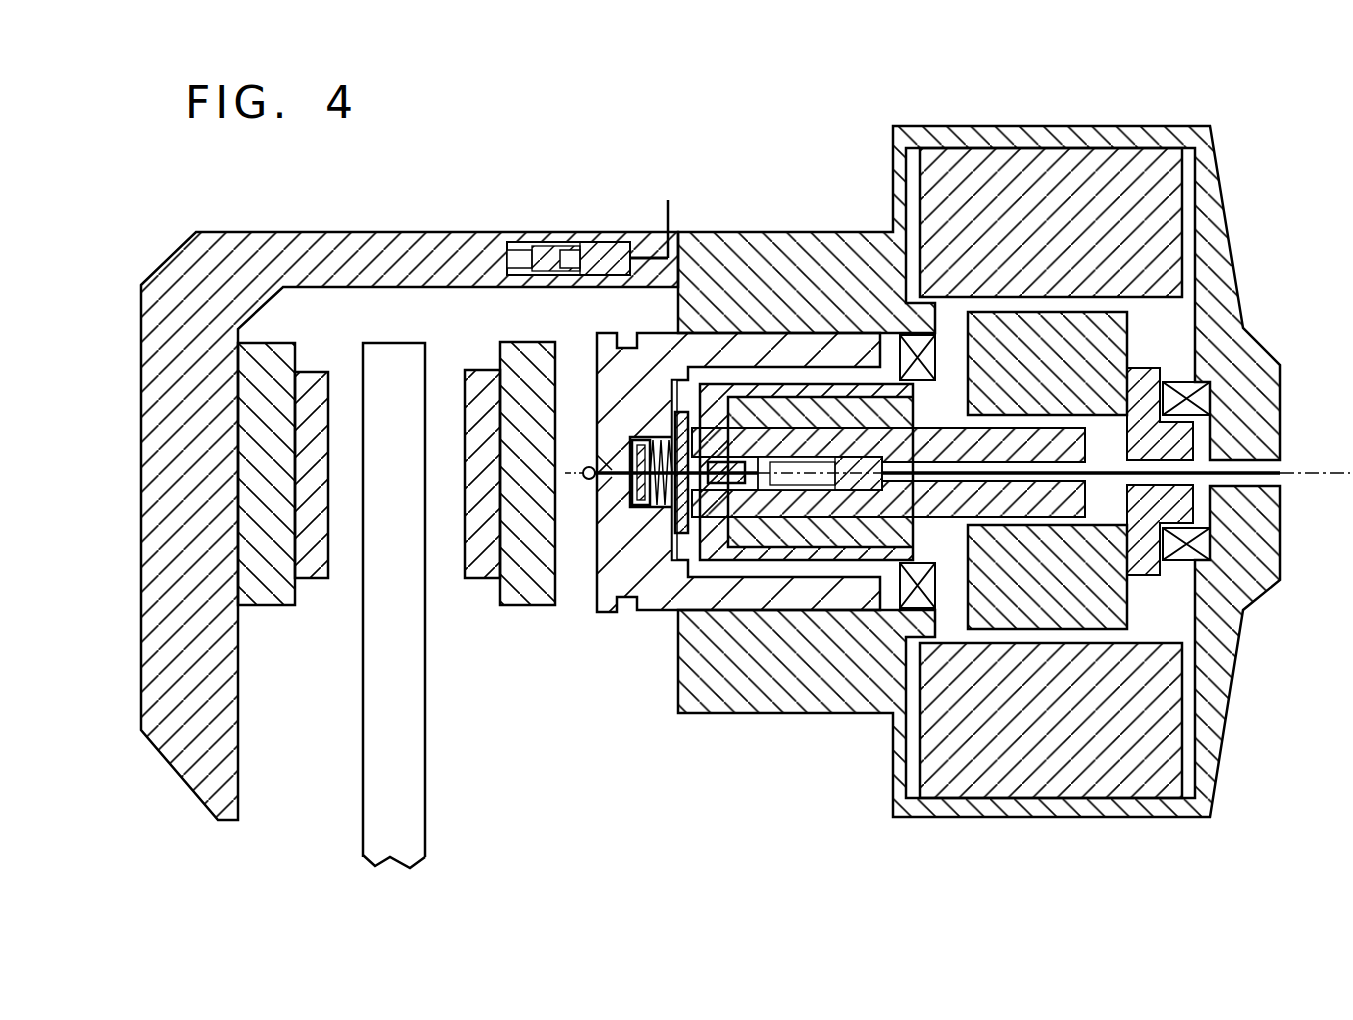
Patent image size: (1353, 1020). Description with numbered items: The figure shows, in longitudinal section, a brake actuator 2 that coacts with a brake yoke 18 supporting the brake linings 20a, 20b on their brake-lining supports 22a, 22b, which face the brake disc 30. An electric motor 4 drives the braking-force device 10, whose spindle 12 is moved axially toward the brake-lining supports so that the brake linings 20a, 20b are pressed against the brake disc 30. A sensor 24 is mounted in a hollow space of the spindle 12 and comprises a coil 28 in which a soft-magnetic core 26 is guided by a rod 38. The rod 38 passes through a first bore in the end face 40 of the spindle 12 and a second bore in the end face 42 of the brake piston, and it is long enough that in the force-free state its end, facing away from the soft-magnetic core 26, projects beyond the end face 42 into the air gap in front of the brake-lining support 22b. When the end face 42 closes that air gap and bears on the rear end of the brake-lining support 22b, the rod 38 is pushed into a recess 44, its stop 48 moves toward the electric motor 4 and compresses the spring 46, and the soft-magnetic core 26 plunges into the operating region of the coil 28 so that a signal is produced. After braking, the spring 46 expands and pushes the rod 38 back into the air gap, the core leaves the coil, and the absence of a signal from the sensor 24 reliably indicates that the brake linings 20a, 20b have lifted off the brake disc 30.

The brake actuator 2 is at (1210, 690).
The electric motor 4 is at (1175, 197).
The braking-force device 10 is at (925, 448).
The spindle 12 is at (722, 492).
The brake yoke 18 is at (180, 297).
The brake lining 20a is at (318, 575).
The brake lining 20b is at (484, 578).
The brake-lining support 22a is at (272, 587).
The brake-lining support 22b is at (528, 598).
The sensor 24 is at (848, 530).
The soft-magnetic core 26 is at (770, 560).
The coil 28 is at (808, 445).
The brake disc 30 is at (415, 778).
The rod 38 is at (620, 455).
The end face 40 is at (672, 427).
The end face 42 is at (597, 393).
The recess 44 is at (605, 483).
The spring 46 is at (660, 510).
The stop 48 is at (638, 510).